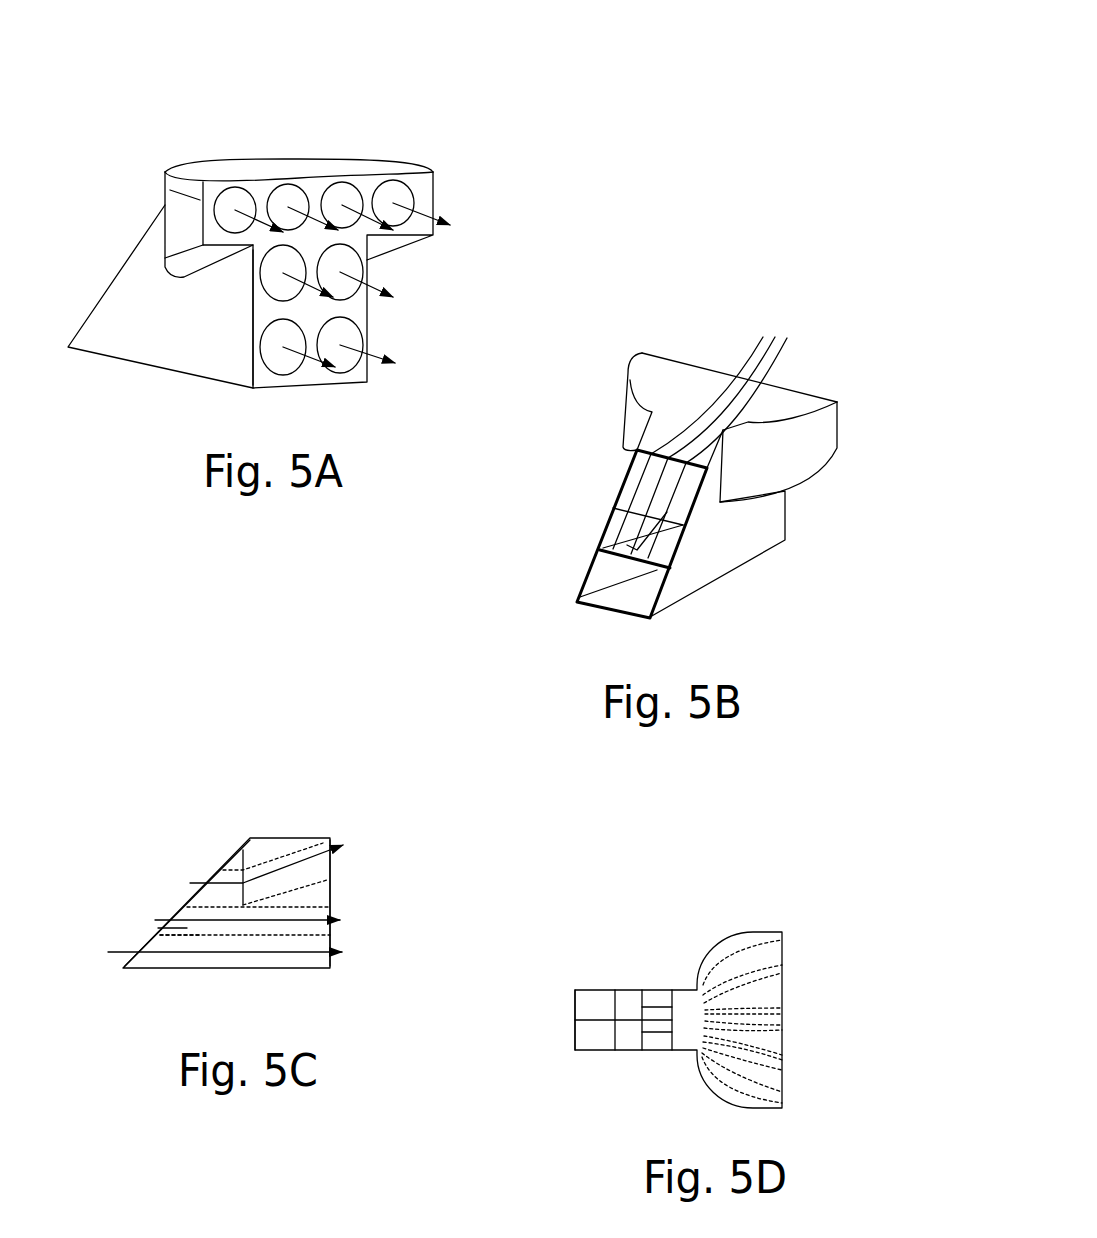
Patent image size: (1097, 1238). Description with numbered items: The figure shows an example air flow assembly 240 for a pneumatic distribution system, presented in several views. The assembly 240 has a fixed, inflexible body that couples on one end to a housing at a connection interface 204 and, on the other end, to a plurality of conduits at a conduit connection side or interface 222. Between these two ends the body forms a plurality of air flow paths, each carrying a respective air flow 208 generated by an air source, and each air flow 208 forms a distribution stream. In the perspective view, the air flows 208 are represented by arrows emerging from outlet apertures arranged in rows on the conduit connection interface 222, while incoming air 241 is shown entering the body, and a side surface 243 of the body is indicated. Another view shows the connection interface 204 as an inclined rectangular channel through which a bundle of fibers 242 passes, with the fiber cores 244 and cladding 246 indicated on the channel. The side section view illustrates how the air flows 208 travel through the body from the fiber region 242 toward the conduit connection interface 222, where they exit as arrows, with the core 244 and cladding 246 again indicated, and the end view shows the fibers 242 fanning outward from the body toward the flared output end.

In FIG. 5A, the light coupling element 240 is at (242, 98).
In FIG. 5B, the light coupling element 240 is at (868, 415).
In FIG. 5C, the light coupling element 240 is at (303, 793).
In FIG. 5D, the light coupling element 240 is at (673, 950).
In FIG. 5A, the conduit connection side or interface 222 is at (317, 177).
In FIG. 5C, the conduit connection side or interface 222 is at (332, 843).
In FIG. 5A, the incident light 241 is at (203, 203).
In FIG. 5A, the side surface 243 is at (253, 328).
In FIG. 5A, the air flow 208 is at (432, 217).
In FIG. 5C, the air flow 208 is at (262, 898).
In FIG. 5B, the connection interface 204 is at (613, 510).
In FIG. 5B, the optical fibers 242 is at (665, 418).
In FIG. 5C, the optical fibers 242 is at (203, 897).
In FIG. 5D, the optical fibers 242 is at (770, 955).
In FIG. 5B, the fiber core 244 is at (663, 545).
In FIG. 5C, the fiber core 244 is at (187, 928).
In FIG. 5D, the fiber core 244 is at (628, 1007).
In FIG. 5B, the fiber cladding 246 is at (627, 607).
In FIG. 5C, the fiber cladding 246 is at (173, 950).
In FIG. 5D, the fiber cladding 246 is at (593, 1003).